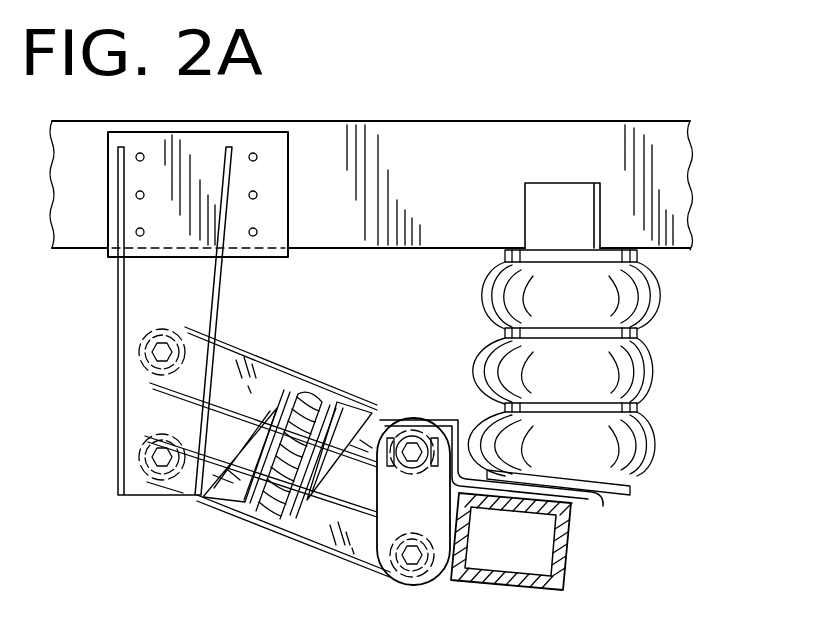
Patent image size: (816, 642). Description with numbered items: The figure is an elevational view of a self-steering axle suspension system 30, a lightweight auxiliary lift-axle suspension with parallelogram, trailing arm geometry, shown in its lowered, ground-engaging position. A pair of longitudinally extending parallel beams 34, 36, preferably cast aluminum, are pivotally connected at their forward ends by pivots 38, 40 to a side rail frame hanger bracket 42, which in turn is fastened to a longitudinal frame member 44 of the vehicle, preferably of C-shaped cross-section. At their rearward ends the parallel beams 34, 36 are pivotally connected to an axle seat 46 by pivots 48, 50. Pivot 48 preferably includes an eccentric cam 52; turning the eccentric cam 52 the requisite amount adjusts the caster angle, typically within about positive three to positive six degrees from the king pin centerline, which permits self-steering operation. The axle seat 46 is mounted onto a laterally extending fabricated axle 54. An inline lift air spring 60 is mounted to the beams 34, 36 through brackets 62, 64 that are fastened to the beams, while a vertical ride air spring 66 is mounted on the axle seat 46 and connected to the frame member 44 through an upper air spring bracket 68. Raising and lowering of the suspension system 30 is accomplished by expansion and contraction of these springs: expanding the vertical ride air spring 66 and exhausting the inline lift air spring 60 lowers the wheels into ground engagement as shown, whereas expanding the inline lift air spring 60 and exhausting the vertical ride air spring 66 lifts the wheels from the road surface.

The self-steering axle suspension system 30 is at (737, 287).
The parallel beam 34 is at (272, 378).
The parallel beam 36 is at (300, 525).
The pivot 38 is at (150, 360).
The pivot 40 is at (158, 448).
The side rail frame hanger bracket 42 is at (205, 145).
The frame member 44 is at (675, 182).
The axle seat 46 is at (470, 515).
The pivot 48 is at (412, 440).
The pivot 50 is at (418, 562).
The eccentric cam 52 is at (410, 467).
The fabricated axle 54 is at (572, 540).
The inline lift air spring 60 is at (325, 410).
The bracket 62 is at (222, 505).
The bracket 64 is at (352, 413).
The vertical ride air spring 66 is at (655, 368).
The upper air spring bracket 68 is at (555, 195).